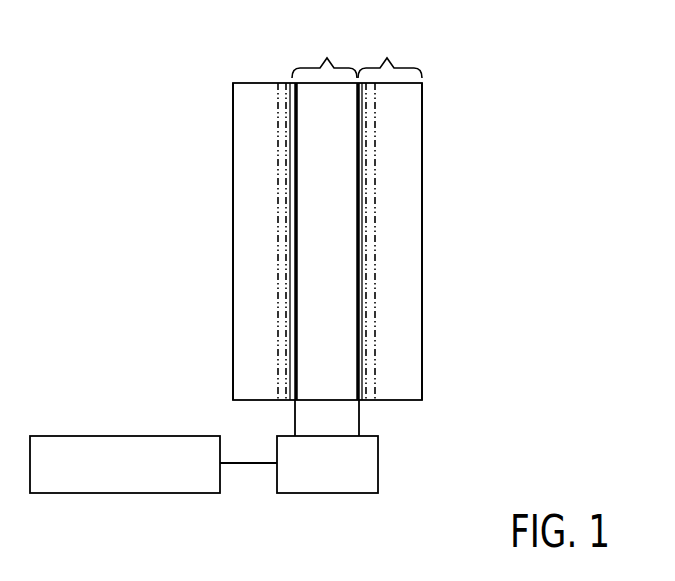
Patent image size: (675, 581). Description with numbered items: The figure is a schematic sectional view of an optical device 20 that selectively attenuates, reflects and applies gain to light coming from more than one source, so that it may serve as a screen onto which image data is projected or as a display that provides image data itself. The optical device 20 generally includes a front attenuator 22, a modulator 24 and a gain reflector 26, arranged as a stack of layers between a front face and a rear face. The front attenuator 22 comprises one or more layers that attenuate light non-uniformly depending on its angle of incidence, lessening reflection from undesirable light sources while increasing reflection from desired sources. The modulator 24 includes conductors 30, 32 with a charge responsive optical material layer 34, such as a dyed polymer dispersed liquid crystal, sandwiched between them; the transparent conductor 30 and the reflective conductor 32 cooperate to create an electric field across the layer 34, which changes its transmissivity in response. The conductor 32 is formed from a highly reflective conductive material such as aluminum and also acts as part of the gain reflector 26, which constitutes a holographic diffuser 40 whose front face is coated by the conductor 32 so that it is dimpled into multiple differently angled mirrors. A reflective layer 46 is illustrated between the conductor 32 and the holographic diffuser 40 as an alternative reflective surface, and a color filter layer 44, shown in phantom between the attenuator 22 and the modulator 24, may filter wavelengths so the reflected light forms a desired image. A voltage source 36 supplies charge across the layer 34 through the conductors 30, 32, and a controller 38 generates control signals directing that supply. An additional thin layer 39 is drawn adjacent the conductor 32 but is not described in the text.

The optical device 20 is at (173, 107).
The front attenuator 22 is at (262, 82).
The modulator 24 is at (324, 54).
The gain reflector 26 is at (390, 54).
The conductor 30 is at (293, 353).
The conductor 32 is at (360, 352).
The charge responsive optical material layer 34 is at (337, 308).
The voltage source 36 is at (328, 494).
The controller 38 is at (116, 495).
The alignment layer 39 is at (357, 132).
The holographic diffuser 40 is at (408, 218).
The color filter layer 44 is at (278, 162).
The reflective layer 46 is at (377, 160).